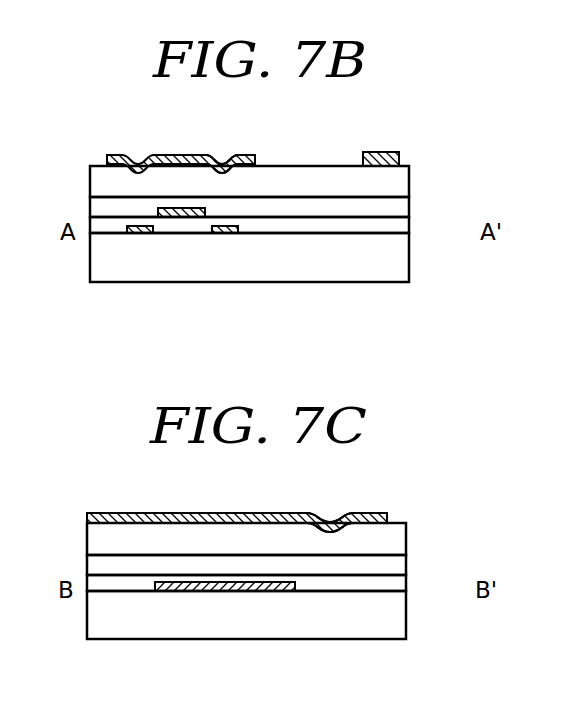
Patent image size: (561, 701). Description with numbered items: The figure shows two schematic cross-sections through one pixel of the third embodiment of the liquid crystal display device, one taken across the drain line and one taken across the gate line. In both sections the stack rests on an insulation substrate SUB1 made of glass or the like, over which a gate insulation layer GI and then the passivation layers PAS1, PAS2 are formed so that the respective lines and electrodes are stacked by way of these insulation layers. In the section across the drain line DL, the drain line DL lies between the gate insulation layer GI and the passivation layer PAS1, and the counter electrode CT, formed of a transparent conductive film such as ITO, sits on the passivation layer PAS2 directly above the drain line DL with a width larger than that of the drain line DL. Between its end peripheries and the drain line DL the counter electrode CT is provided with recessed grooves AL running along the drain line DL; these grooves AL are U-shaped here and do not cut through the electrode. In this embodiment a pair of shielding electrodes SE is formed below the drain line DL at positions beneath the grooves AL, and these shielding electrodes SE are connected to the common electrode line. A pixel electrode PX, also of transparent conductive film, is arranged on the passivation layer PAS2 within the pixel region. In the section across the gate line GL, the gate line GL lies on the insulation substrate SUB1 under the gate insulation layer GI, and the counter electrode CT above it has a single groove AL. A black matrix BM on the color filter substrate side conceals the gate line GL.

In FIG. 7B, the insulation substrate SUB1 is at (403, 262).
In FIG. 7C, the insulation substrate SUB1 is at (403, 630).
In FIG. 7B, the gate insulation layer GI is at (403, 227).
In FIG. 7C, the gate insulation layer GI is at (403, 588).
In FIG. 7B, the passivation layer PAS1 is at (403, 212).
In FIG. 7C, the passivation layer PAS1 is at (403, 566).
In FIG. 7B, the passivation layer PAS2 is at (405, 182).
In FIG. 7C, the passivation layer PAS2 is at (404, 537).
In FIG. 7B, the recessed groove AL is at (223, 152).
In FIG. 7C, the recessed groove AL is at (330, 513).
In FIG. 7B, the counter electrode CT is at (240, 152).
In FIG. 7C, the counter electrode CT is at (388, 516).
In FIG. 7B, the pixel electrode PX is at (383, 150).
In FIG. 7B, the drain line DL is at (182, 217).
In FIG. 7B, the shielding electrode SE is at (136, 234).
In FIG. 7C, the gate line GL is at (281, 592).
In FIG. 7C, the black matrix BM is at (7, 614).